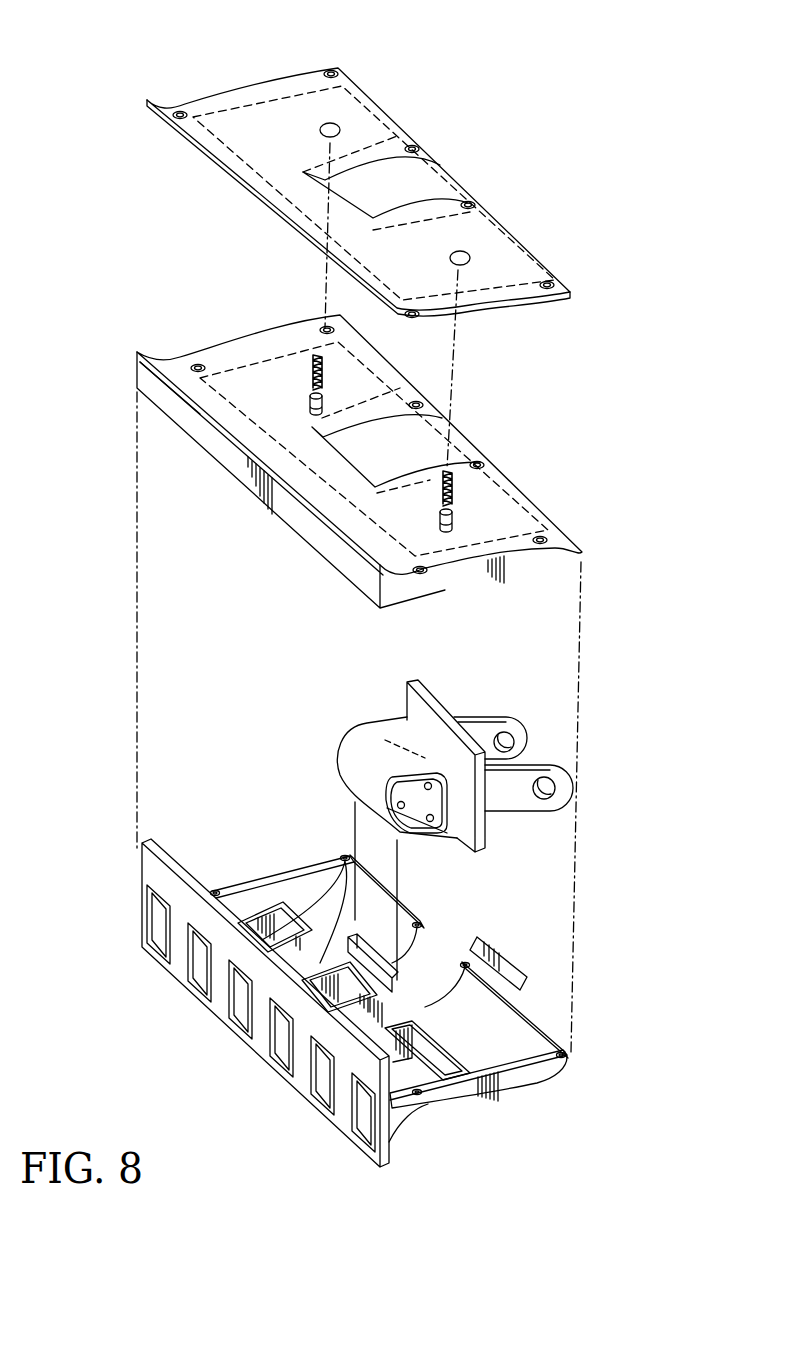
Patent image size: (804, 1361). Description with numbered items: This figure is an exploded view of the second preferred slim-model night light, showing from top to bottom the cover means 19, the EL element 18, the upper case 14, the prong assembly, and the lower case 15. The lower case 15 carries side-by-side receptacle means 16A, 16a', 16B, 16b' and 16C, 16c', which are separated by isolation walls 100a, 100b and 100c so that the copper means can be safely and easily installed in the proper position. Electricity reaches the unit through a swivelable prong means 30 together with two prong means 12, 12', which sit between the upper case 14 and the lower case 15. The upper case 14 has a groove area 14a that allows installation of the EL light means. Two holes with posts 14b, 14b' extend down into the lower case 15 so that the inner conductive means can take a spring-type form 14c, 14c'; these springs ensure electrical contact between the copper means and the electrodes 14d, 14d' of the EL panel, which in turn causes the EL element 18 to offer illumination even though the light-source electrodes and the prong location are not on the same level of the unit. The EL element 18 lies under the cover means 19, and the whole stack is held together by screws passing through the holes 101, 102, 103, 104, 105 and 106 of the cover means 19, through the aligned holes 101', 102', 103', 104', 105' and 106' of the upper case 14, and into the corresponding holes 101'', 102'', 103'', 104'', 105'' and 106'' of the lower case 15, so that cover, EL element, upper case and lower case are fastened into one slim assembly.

The cover means 19 is at (504, 229).
The EL element 18 is at (497, 265).
The upper case 14 is at (582, 556).
The groove area 14a is at (527, 503).
The hole with post 14b is at (253, 469).
The spring type form 14c is at (452, 460).
The EL panel electrode 14d is at (530, 359).
The hole with post 14b' is at (297, 402).
The spring type form 14c' is at (324, 381).
The EL panel electrode 14d' is at (238, 225).
The lower case 15 is at (537, 1078).
The swivelable prong means 30 is at (430, 690).
The prong means 12 is at (565, 782).
The prong means 12' is at (545, 727).
The isolation wall 100a is at (268, 930).
The isolation wall 100b is at (330, 970).
The isolation wall 100c is at (470, 1052).
The hole 101 is at (163, 67).
The hole 102 is at (302, 43).
The hole 103 is at (446, 114).
The hole 104 is at (510, 176).
The hole 105 is at (593, 283).
The hole 106 is at (476, 333).
The hole of the upper case 101' is at (140, 337).
The hole of the upper case 102' is at (295, 296).
The hole of the upper case 103' is at (458, 386).
The hole of the upper case 104' is at (498, 435).
The hole of the upper case 105' is at (600, 532).
The hole of the upper case 106' is at (463, 596).
The hole of the lower case 101'' is at (187, 826).
The hole of the lower case 102'' is at (319, 817).
The hole of the lower case 103'' is at (475, 911).
The hole of the lower case 104'' is at (512, 953).
The hole of the lower case 105'' is at (610, 1053).
The hole of the lower case 106'' is at (472, 1137).
The receptacle means 16A is at (358, 1135).
The receptacle means 16B is at (273, 1060).
The receptacle means 16C is at (190, 968).
The receptacle means 16a' is at (263, 1081).
The receptacle means 16b' is at (169, 999).
The receptacle means 16c' is at (112, 924).